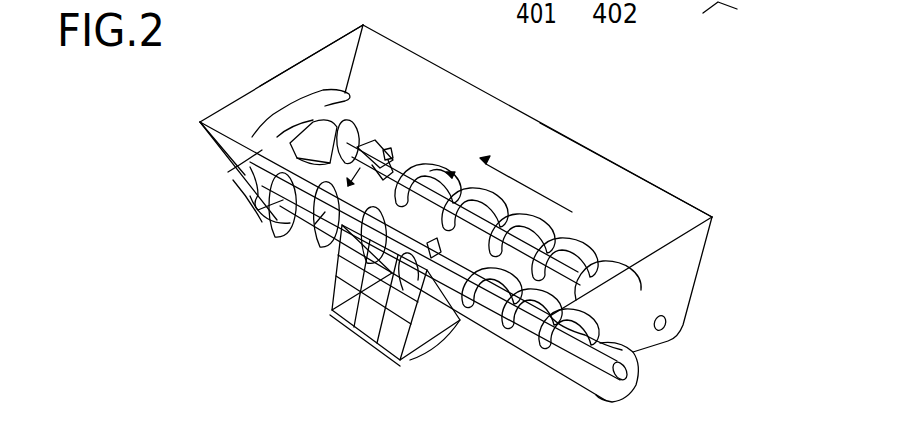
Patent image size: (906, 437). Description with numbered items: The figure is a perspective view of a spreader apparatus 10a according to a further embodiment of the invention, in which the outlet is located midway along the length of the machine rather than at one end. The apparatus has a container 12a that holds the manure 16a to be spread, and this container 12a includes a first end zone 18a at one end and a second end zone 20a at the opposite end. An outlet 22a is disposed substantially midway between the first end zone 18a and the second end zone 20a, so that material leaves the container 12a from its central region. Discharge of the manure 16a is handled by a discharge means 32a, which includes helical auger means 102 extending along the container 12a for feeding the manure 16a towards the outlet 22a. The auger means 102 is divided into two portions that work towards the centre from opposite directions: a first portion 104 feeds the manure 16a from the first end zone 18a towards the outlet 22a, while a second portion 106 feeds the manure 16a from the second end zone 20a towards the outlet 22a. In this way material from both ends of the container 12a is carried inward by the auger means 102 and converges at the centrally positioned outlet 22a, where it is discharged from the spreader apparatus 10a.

The spreader apparatus 10a is at (570, 110).
The container 12a is at (605, 155).
The manure 16a is at (246, 148).
The first end zone 18a is at (683, 226).
The second end zone 20a is at (253, 97).
The outlet 22a is at (333, 306).
The discharge means 32a is at (306, 231).
The helical auger means 102 is at (479, 316).
The first portion 104 is at (626, 353).
The second portion 106 is at (272, 222).